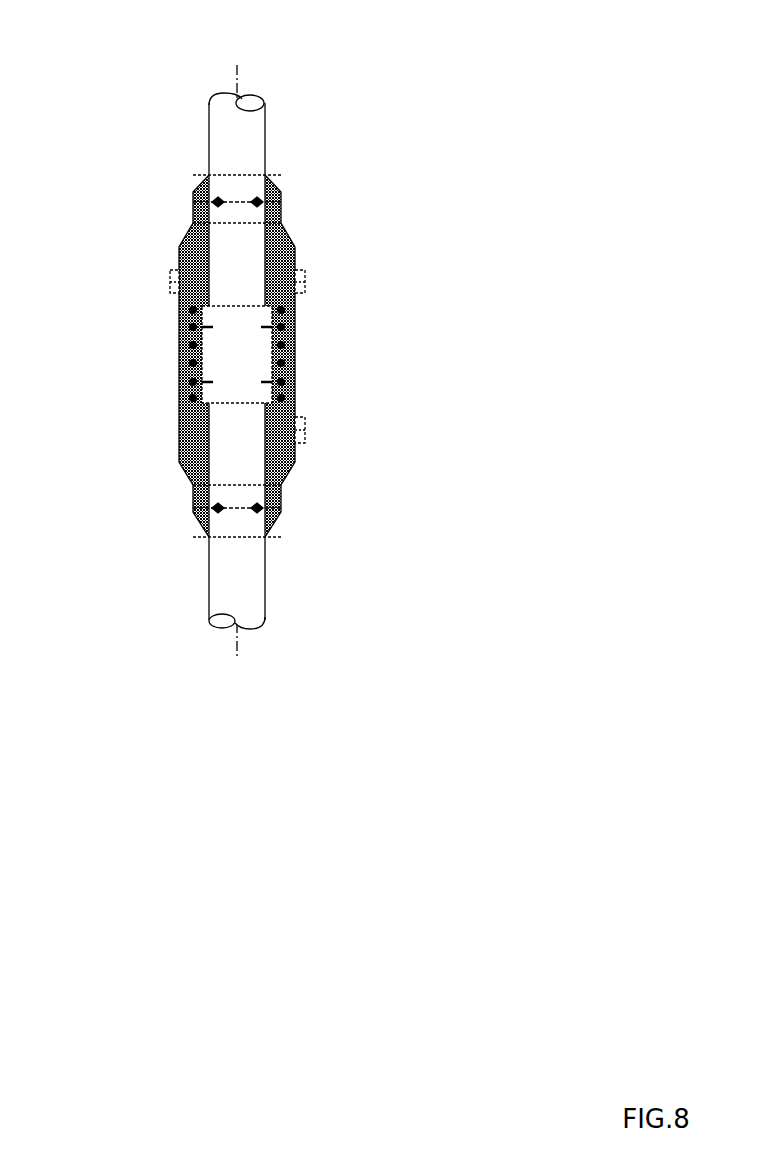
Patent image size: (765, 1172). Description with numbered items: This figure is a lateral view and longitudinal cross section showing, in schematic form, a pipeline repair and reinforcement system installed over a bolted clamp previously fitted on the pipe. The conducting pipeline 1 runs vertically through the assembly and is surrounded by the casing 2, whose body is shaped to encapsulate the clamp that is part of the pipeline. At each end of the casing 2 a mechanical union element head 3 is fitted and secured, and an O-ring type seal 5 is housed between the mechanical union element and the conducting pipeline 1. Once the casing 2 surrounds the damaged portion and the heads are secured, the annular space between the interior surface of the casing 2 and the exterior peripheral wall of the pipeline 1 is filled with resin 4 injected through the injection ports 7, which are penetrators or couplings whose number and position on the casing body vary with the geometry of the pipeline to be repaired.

The conducting pipeline 1 is at (313, 358).
The casing 2 is at (314, 362).
The mechanical union element head 3 is at (309, 363).
The resin 4 is at (176, 356).
The O-ring type seal 5 is at (173, 352).
The injection ports 7 is at (244, 384).